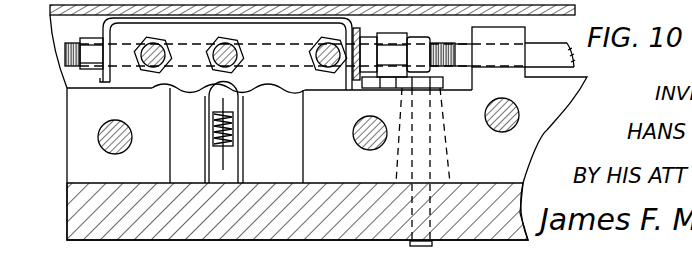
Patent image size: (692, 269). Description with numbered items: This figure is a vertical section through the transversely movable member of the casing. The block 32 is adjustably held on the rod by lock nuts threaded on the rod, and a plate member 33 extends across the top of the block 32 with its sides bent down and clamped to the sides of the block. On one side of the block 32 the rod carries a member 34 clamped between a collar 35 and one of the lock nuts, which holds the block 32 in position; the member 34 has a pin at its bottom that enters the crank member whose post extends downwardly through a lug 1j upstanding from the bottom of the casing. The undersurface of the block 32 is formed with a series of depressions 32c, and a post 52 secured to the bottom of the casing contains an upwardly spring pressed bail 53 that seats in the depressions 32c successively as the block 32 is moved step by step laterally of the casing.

The block 32 is at (127, 77).
The plate member 33 is at (148, 20).
The depressions 32c is at (254, 93).
The spring pressed bail 53 is at (208, 96).
The post 52 is at (243, 163).
The collar 35 is at (368, 42).
The member 34 is at (394, 38).
The lug 1j is at (430, 143).